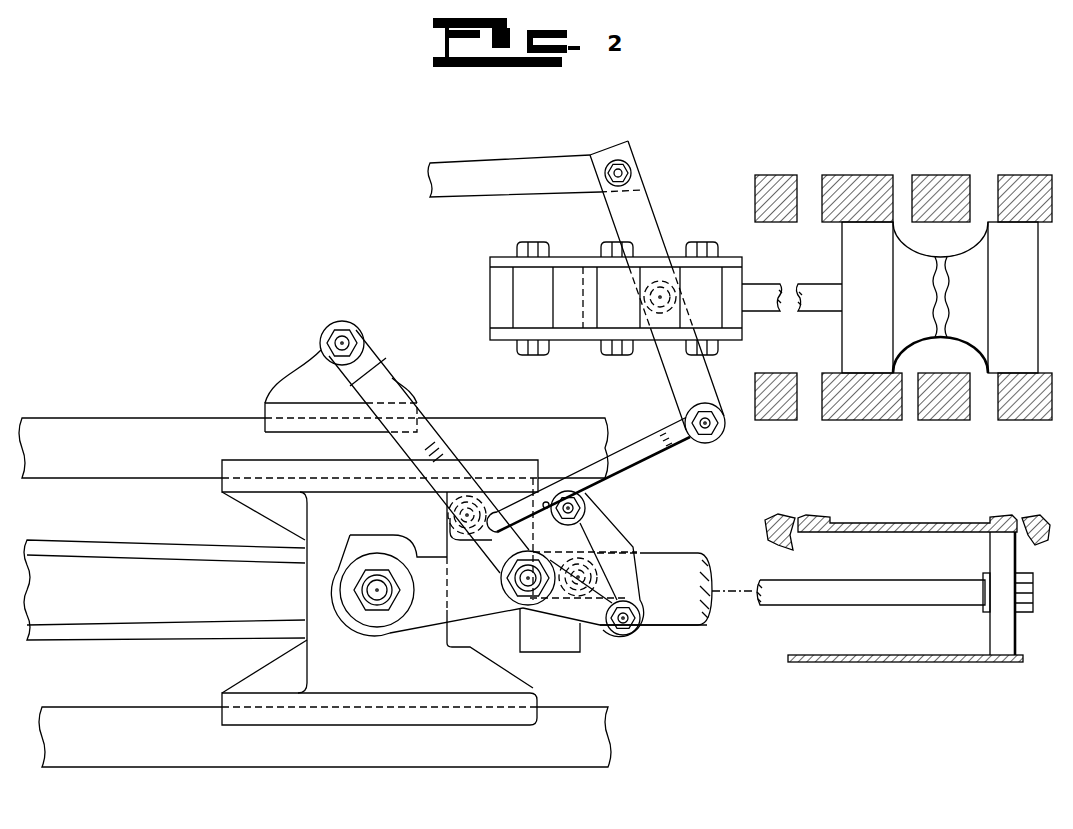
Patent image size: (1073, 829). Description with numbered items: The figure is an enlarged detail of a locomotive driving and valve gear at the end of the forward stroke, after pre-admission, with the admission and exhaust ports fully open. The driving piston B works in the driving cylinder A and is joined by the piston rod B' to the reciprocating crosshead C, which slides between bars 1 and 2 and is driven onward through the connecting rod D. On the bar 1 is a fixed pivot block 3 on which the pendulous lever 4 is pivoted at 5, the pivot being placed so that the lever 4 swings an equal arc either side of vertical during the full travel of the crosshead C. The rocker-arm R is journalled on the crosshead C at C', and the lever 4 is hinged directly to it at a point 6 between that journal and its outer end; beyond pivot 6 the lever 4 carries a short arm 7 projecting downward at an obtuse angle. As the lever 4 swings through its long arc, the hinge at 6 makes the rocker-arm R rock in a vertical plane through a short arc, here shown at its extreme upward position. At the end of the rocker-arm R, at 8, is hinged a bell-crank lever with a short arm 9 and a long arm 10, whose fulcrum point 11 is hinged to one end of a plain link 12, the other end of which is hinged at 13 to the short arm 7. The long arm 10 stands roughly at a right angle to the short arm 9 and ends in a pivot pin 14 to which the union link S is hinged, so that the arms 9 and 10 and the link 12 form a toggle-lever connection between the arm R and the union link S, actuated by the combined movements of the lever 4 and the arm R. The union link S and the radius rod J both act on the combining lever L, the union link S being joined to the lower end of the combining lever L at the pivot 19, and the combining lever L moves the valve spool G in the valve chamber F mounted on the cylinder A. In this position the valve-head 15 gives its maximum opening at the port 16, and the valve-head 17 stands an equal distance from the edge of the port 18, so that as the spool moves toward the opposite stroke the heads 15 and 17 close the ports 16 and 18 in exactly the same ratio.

The bar 1 is at (526, 424).
The bar 2 is at (473, 768).
The fixed pivot block 3 is at (310, 368).
The pendulous lever 4 is at (432, 424).
The pivot 5 is at (360, 340).
The pivot 6 is at (528, 592).
The short arm 7 is at (597, 615).
The hinge 8 is at (600, 577).
The short arm 9 is at (592, 548).
The long arm 10 is at (546, 503).
The fulcrum point 11 is at (586, 506).
The plain link 12 is at (634, 542).
The hinge 13 is at (636, 634).
The pivot pin 14 is at (458, 518).
The valve-head 15 is at (1013, 297).
The port 16 is at (983, 420).
The valve-head 17 is at (867, 297).
The port 18 is at (808, 420).
The pivot 19 is at (715, 436).
The driving cylinder A is at (930, 523).
The driving piston B is at (990, 593).
The piston rod B' is at (791, 600).
The crosshead C is at (380, 609).
The journal C' is at (373, 609).
The connecting rod D is at (123, 641).
The valve chamber F is at (932, 175).
The valve spool G is at (913, 340).
The radius rod J is at (463, 192).
The combining lever L is at (652, 217).
The rocker-arm R is at (437, 612).
The union link S is at (648, 448).